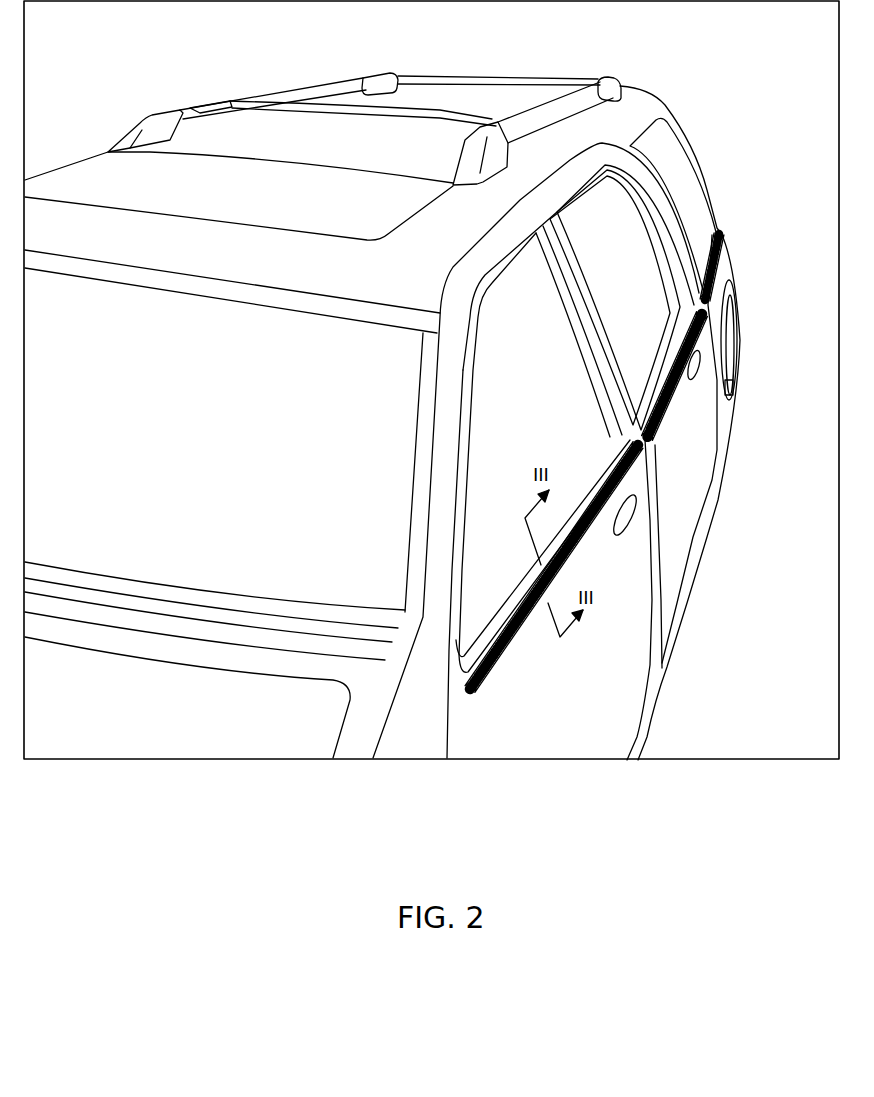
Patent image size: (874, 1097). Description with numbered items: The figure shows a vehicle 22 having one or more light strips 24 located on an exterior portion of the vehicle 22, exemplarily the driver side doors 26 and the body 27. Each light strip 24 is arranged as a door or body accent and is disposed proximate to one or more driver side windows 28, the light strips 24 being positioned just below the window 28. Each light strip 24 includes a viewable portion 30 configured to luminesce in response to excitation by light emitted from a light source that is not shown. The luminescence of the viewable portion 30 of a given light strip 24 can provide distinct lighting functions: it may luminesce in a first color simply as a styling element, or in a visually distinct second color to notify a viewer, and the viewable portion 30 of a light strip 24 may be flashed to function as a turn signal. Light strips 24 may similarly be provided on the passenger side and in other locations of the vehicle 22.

The vehicle 22 is at (668, 50).
The light strip 24 is at (720, 257).
The driver side doors 26 is at (677, 520).
The body 27 is at (716, 388).
The driver side windows 28 is at (597, 222).
The viewable portion 30 is at (717, 274).